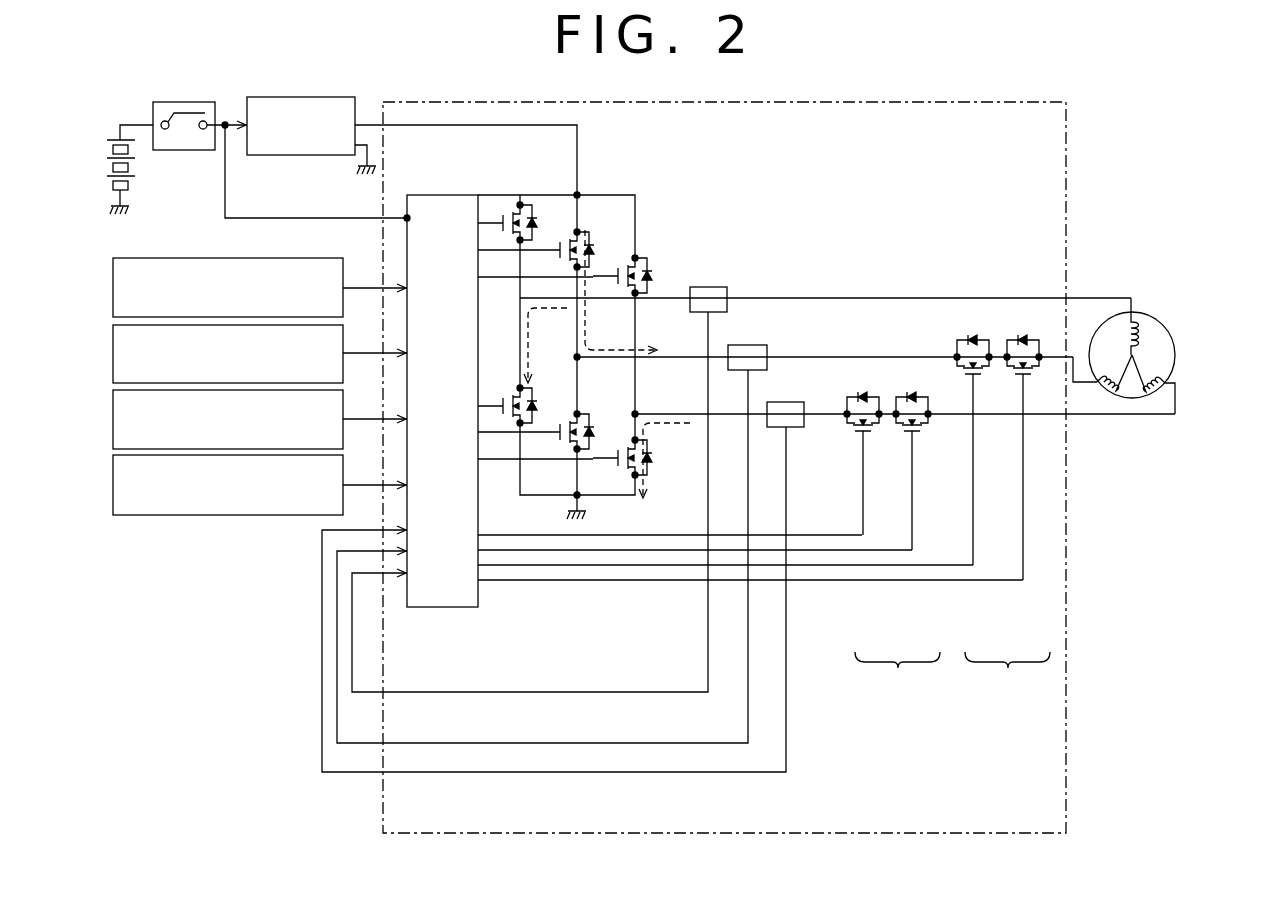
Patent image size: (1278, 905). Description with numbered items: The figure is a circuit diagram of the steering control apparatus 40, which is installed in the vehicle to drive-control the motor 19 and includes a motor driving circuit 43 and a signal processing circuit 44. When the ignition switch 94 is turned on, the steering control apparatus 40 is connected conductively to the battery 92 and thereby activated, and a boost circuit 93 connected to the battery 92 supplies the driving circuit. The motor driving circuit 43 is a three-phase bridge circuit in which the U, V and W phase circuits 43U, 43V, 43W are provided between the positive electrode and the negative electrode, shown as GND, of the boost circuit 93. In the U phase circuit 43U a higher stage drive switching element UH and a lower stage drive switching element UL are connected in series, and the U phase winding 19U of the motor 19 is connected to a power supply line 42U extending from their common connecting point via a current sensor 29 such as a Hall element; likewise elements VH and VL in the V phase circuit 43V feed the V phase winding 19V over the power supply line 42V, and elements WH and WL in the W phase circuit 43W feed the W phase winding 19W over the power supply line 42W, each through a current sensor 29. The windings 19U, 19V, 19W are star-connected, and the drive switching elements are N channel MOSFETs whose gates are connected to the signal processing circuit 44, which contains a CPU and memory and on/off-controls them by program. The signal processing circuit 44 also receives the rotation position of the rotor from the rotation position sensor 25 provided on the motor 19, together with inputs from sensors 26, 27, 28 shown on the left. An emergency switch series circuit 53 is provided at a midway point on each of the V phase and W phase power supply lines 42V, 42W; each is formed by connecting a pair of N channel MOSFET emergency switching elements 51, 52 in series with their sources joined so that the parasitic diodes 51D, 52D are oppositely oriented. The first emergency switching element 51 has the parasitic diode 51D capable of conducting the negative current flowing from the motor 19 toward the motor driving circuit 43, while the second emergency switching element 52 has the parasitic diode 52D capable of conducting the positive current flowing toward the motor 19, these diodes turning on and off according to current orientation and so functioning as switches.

The motor 19 is at (1168, 343).
The U phase winding 19U is at (1120, 330).
The V phase winding 19V is at (1145, 390).
The W phase winding 19W is at (1165, 390).
The rotation position sensor 25 is at (113, 420).
The steering angle sensor 26 is at (113, 355).
The torque sensor 27 is at (113, 485).
The vehicle speed sensor 28 is at (113, 290).
The current sensor 29 is at (786, 400).
The steering control apparatus 40 is at (1070, 134).
The power supply line 42U is at (1093, 296).
The power supply line 42V is at (1078, 385).
The power supply line 42W is at (1133, 415).
The motor driving circuit 43 is at (609, 188).
The U phase circuit 43U is at (530, 352).
The V phase circuit 43V is at (577, 215).
The W phase circuit 43W is at (635, 235).
The signal processing circuit 44 is at (474, 188).
The first emergency switching element 51 is at (866, 440).
The parasitic diode 51D is at (975, 338).
The second emergency switching element 52 is at (915, 440).
The parasitic diode 52D is at (1025, 338).
The emergency switch series circuit 53 is at (952, 676).
The battery 92 is at (135, 168).
The boost circuit 93 is at (265, 155).
The ignition switch 94 is at (165, 150).